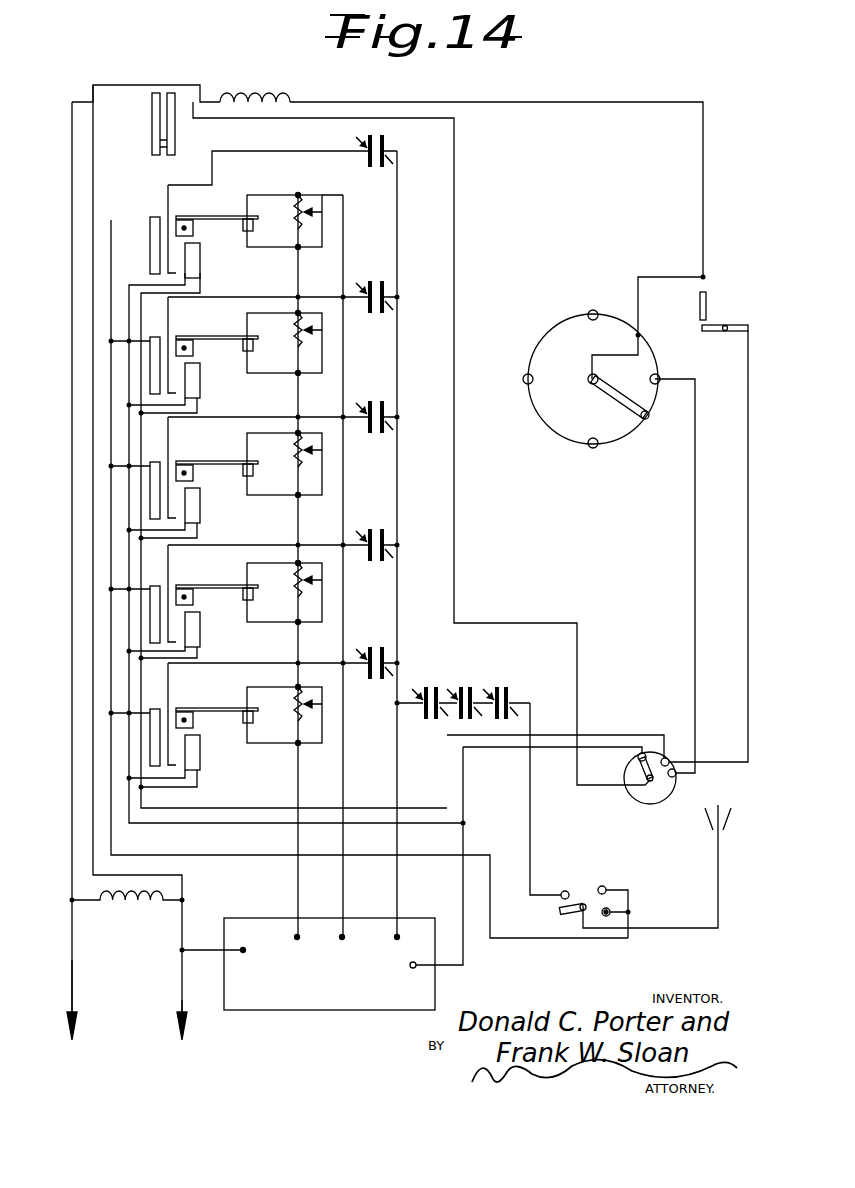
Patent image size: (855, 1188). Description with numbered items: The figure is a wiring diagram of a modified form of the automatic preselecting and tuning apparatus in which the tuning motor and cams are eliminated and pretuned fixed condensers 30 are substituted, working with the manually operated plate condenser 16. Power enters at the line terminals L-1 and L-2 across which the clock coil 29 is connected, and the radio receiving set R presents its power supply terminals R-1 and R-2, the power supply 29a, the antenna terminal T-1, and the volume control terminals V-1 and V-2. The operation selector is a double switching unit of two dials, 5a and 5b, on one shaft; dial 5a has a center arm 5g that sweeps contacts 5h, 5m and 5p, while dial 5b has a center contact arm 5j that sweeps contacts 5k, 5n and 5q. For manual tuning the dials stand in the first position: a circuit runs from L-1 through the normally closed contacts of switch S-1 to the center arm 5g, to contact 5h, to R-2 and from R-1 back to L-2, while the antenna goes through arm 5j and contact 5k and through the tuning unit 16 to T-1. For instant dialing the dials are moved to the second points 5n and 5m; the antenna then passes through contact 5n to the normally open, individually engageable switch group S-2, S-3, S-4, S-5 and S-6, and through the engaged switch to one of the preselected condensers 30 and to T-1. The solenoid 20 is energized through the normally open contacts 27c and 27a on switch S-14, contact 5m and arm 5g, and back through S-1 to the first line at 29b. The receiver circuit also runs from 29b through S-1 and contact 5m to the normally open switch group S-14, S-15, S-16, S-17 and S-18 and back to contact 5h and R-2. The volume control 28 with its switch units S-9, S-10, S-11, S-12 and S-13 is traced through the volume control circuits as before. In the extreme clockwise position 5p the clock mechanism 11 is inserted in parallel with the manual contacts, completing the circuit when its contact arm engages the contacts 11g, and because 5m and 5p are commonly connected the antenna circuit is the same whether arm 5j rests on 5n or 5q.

The solenoid 20 is at (250, 97).
The fixed condensers 30 is at (390, 143).
The switch with normally closed contacts S-1 is at (152, 140).
The relay switch S-2 is at (152, 268).
The relay switch S-3 is at (150, 378).
The relay switch S-4 is at (150, 502).
The relay switch S-5 is at (150, 627).
The relay switch S-6 is at (150, 755).
The volume control switch unit S-9 is at (260, 216).
The volume control switch unit S-10 is at (252, 347).
The volume control switch unit S-11 is at (254, 468).
The volume control switch unit S-12 is at (254, 595).
The volume control switch unit S-13 is at (254, 718).
The normally open switch S-14 is at (208, 248).
The normally open switch S-15 is at (208, 380).
The normally open switch S-16 is at (205, 505).
The normally open switch S-17 is at (205, 625).
The normally open switch S-18 is at (205, 750).
The volume control 28 is at (296, 316).
The normally open contact 27c is at (708, 297).
The normally open contact 27a is at (736, 322).
The clock mechanism 11 is at (626, 420).
The time switch contacts 11g is at (534, 378).
The plate condenser 16 is at (466, 690).
The operation selector dial 5a is at (651, 793).
The center arm 5g is at (626, 771).
The first contact 5h is at (645, 753).
The second contact 5m is at (669, 760).
The extreme clockwise contact 5p is at (676, 775).
The first contact 5k is at (567, 880).
The operation selector dial 5b is at (594, 888).
The second contact 5n is at (610, 889).
The center contact arm 5j is at (561, 915).
The third contact 5q is at (606, 918).
The clock coil 29 is at (128, 906).
The power supply 29a is at (205, 947).
The line connection 29b is at (66, 976).
The line terminal L-1 is at (63, 1033).
The line terminal L-2 is at (178, 1033).
The radio receiving set R is at (329, 964).
The receiver power terminal R-1 is at (251, 964).
The receiver power terminal R-2 is at (402, 981).
The volume control circuit terminal V-1 is at (298, 952).
The volume control circuit terminal V-2 is at (343, 952).
The tuning or antenna circuit terminal T-1 is at (396, 952).